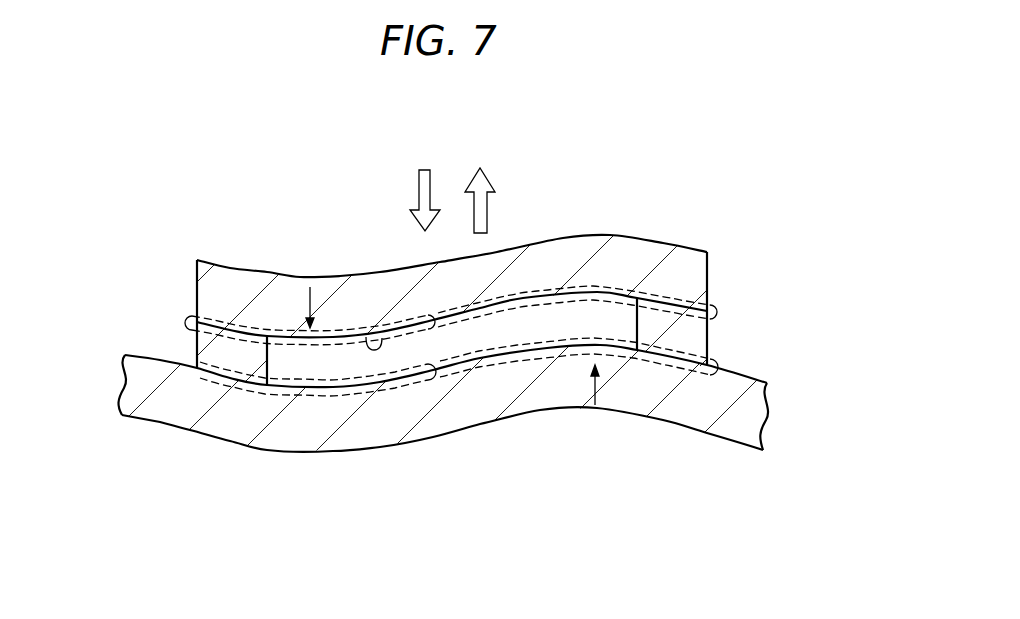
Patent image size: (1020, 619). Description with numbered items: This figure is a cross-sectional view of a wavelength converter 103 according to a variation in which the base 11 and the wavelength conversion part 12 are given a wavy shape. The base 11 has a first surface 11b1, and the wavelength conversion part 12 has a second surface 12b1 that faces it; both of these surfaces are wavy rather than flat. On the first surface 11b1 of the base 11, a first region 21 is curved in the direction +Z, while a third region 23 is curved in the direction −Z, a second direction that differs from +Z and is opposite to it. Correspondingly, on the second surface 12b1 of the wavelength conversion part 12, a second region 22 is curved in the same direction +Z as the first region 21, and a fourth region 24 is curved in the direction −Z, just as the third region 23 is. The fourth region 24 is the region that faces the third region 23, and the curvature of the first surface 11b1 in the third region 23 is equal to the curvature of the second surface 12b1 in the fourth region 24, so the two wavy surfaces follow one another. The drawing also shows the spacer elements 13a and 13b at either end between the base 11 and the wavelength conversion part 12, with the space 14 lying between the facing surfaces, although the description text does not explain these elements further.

The wavelength converter 103 is at (716, 114).
The base 11 is at (752, 413).
The first surface of the base 11b1 is at (157, 357).
The wavelength conversion part 12 is at (700, 270).
The second surface of the wavelength conversion part 12b1 is at (379, 338).
The first spacer 13a is at (196, 349).
The second spacer 13b is at (698, 340).
The cavity 14 is at (452, 345).
The first region 21 is at (528, 362).
The second region 22 is at (535, 292).
The third region 23 is at (335, 398).
The fourth region 24 is at (323, 327).